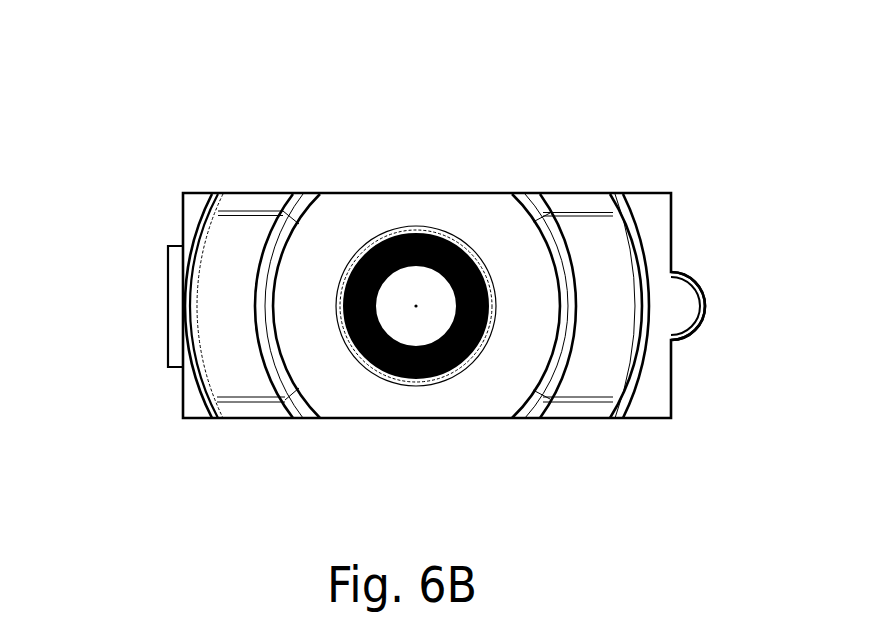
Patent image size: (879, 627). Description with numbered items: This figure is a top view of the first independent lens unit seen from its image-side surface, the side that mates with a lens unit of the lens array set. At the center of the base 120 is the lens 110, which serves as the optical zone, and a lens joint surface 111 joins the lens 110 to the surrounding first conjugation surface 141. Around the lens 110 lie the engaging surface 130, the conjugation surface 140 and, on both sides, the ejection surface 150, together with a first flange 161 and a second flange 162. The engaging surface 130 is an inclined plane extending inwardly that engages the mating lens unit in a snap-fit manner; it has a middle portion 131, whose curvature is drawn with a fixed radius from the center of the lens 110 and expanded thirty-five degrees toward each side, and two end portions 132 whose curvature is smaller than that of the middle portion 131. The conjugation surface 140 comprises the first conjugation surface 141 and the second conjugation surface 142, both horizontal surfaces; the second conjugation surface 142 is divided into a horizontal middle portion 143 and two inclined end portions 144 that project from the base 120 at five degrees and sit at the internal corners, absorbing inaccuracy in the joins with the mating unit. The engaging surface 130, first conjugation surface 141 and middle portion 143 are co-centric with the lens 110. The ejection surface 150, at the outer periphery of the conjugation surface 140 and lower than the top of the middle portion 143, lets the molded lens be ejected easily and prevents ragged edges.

The lens 110 is at (440, 361).
The lens joint surface 111 is at (458, 367).
The base 120 is at (141, 479).
The engaging surface 130 is at (353, 110).
The middle portion 131 is at (272, 285).
The end portions 132 is at (270, 272).
The conjugation surface 140 is at (658, 82).
The first conjugation surface 141 is at (502, 247).
The second conjugation surface 142 is at (658, 135).
The middle portion 143 is at (607, 240).
The end portions 144 is at (572, 205).
The ejection surface 150 is at (647, 412).
The first flange 161 is at (707, 315).
The second flange 162 is at (177, 328).